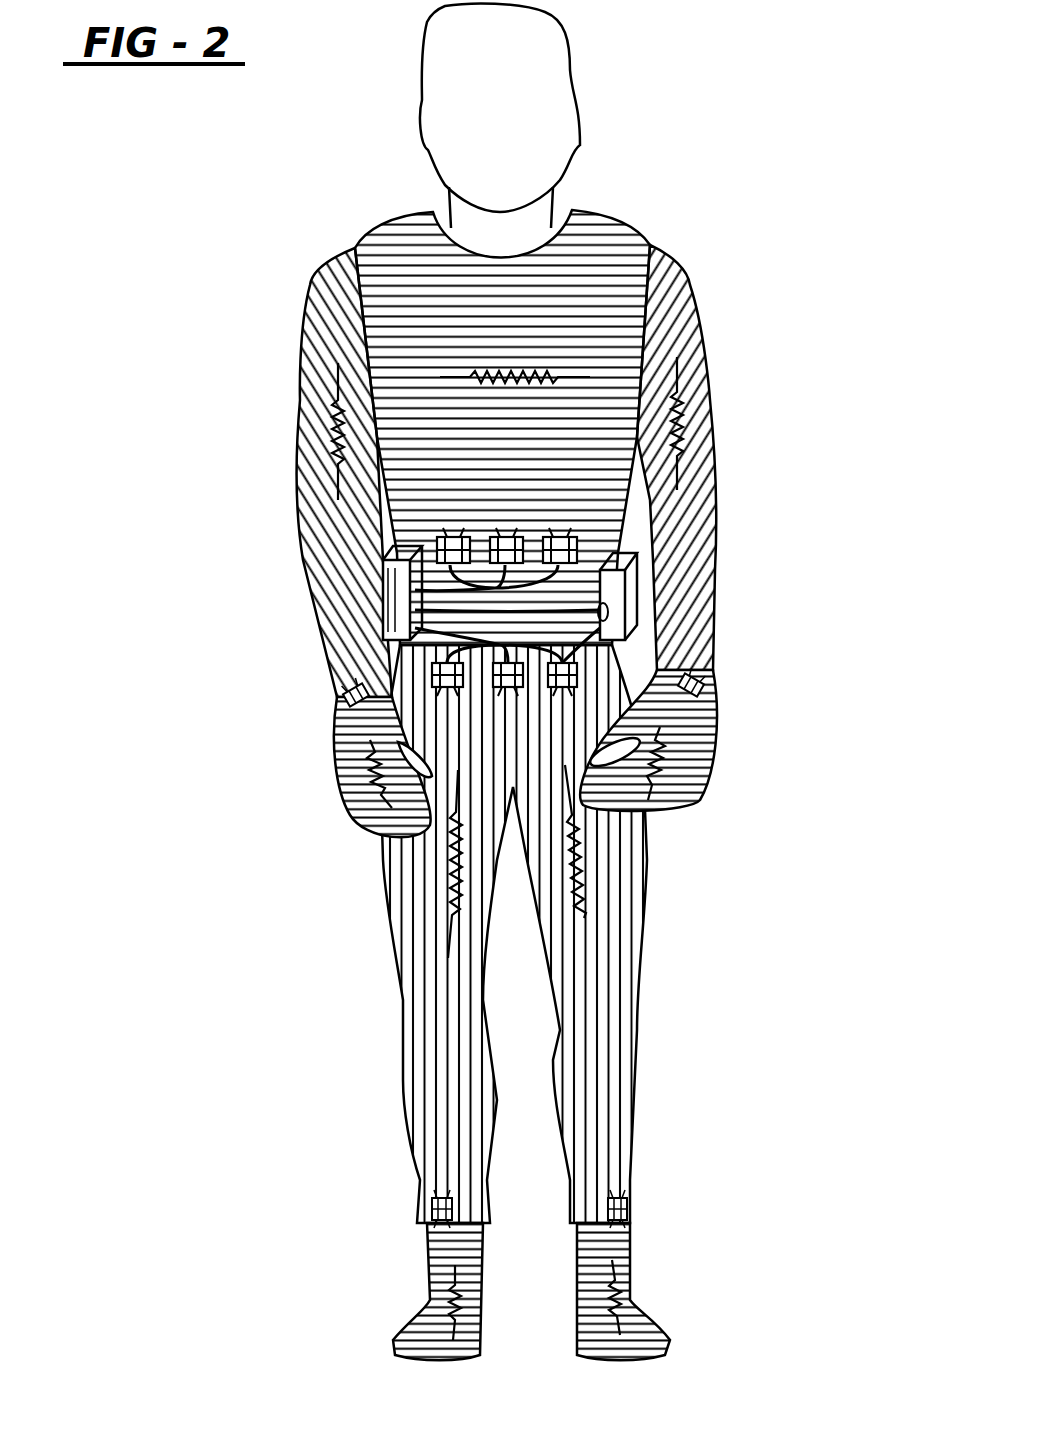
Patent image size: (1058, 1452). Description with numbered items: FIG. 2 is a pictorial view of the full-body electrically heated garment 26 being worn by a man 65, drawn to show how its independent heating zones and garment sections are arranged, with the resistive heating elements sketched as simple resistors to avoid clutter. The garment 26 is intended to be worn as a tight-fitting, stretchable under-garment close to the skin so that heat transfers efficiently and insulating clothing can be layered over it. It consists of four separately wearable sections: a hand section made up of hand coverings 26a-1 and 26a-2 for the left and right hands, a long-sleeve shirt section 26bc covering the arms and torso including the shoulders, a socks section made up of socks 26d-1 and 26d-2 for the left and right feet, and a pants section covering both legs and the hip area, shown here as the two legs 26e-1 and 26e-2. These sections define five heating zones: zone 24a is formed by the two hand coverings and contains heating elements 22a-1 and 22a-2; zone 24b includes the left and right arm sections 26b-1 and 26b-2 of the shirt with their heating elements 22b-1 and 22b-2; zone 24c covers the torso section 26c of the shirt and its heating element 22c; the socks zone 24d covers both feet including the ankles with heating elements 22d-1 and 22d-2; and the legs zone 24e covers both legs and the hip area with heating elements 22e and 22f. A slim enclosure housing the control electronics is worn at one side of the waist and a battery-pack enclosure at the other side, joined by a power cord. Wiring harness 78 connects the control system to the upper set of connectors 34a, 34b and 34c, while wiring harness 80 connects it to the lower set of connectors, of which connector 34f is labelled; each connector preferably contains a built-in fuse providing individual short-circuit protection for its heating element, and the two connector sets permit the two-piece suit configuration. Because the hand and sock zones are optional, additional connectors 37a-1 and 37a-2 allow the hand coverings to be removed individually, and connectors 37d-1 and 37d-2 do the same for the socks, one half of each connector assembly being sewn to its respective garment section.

The man 65 is at (607, 83).
The electrically heated garment 26 is at (680, 213).
The long-sleeve shirt section 26bc is at (683, 237).
The torso heating zone 24c is at (607, 222).
The torso section 26c is at (390, 262).
The torso heating element 22c is at (493, 372).
The left arm section 26b-1 is at (685, 304).
The right arm section 26b-2 is at (328, 528).
The left arm heating element 22b-1 is at (683, 405).
The right arm heating element 22b-2 is at (330, 418).
The arm heating zone 24b is at (275, 471).
The connector 34a is at (452, 535).
The connector 34b is at (500, 535).
The connector 34c is at (560, 535).
The connector 34f is at (447, 692).
The electrical wiring harness 78 is at (420, 587).
The electrical wiring harness 80 is at (412, 630).
The additional electrical connector 37a-1 is at (700, 688).
The additional electrical connector 37a-2 is at (348, 700).
The left hand heating element 22a-1 is at (685, 735).
The right hand heating element 22a-2 is at (370, 748).
The hand covering 26a-1 is at (682, 803).
The hand covering 26a-2 is at (348, 803).
The hand heating zone 24a is at (352, 823).
The leg heating element 22f is at (450, 878).
The leg heating element 22e is at (583, 880).
The legs heating zone 24e is at (375, 948).
The pants section leg 26e-1 is at (620, 1088).
The pants section leg 26e-2 is at (445, 1097).
The additional electrical connector 37d-1 is at (628, 1200).
The additional electrical connector 37d-2 is at (432, 1207).
The left sock heating element 22d-1 is at (620, 1280).
The right sock heating element 22d-2 is at (447, 1295).
The sock 26d-1 is at (640, 1322).
The sock 26d-2 is at (402, 1333).
The socks heating zone 24d is at (492, 1322).